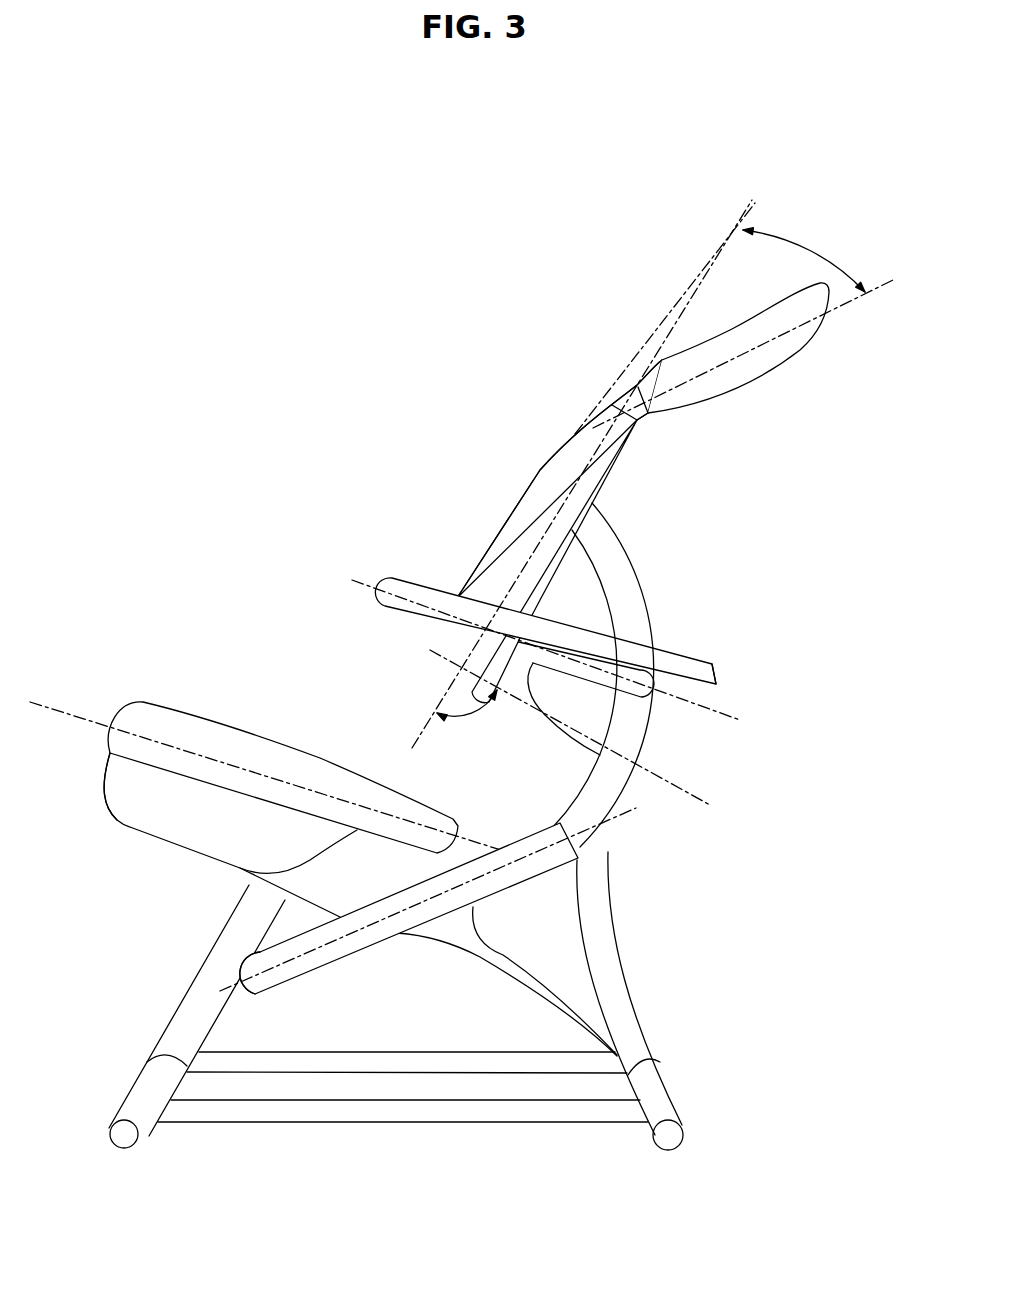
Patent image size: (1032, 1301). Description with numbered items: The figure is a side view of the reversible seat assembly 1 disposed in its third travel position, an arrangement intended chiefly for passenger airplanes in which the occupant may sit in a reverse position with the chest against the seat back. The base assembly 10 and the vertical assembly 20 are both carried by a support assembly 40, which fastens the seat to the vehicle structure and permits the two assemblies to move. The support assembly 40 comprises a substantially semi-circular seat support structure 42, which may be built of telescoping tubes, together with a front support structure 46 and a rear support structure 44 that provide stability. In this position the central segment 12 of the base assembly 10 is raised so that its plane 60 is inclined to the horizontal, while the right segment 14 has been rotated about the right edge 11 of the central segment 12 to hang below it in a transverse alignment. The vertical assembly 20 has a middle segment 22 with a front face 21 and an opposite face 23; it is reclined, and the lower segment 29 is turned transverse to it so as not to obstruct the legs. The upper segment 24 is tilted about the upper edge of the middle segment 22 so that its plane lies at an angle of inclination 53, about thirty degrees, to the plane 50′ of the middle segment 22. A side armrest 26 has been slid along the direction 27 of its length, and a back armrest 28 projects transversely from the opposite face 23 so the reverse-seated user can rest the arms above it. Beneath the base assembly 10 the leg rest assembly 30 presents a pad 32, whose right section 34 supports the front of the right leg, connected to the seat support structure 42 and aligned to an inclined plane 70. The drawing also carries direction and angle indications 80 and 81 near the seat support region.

The reversible seat assembly 1 is at (196, 160).
The base assembly 10 is at (115, 662).
The right edge 11 is at (150, 763).
The central segment 12 is at (173, 743).
The right segment 14 is at (190, 827).
The vertical assembly 20 is at (436, 370).
The front face 21 is at (570, 443).
The middle segment 22 is at (595, 531).
The opposite face 23 is at (607, 477).
The upper segment 24 is at (767, 360).
The side armrest 26 is at (405, 597).
The direction 27 is at (740, 705).
The back armrest 28 is at (710, 663).
The lower segment 29 is at (527, 707).
The leg rest assembly 30 is at (385, 972).
The pad 32 is at (577, 857).
The right section 34 is at (267, 977).
The support assembly 40 is at (683, 859).
The seat support structure 42 is at (647, 750).
The rear support structure 44 is at (620, 1002).
The front support structure 46 is at (190, 1017).
The plane of the middle segment 50′ is at (717, 270).
The angle of inclination 53 is at (806, 250).
The plane of the base assembly 60 is at (70, 717).
The plane 70 is at (503, 877).
The seat support axis 80 is at (673, 783).
The backrest tilt angle 81 is at (463, 717).